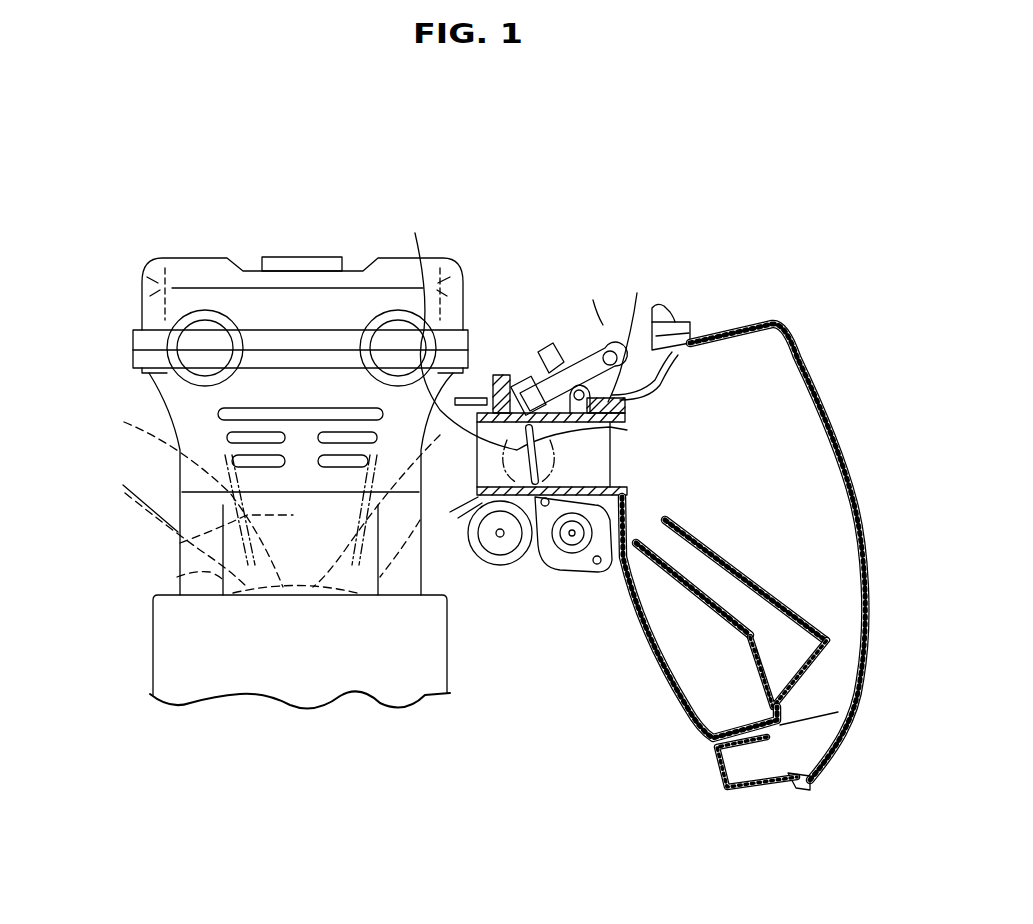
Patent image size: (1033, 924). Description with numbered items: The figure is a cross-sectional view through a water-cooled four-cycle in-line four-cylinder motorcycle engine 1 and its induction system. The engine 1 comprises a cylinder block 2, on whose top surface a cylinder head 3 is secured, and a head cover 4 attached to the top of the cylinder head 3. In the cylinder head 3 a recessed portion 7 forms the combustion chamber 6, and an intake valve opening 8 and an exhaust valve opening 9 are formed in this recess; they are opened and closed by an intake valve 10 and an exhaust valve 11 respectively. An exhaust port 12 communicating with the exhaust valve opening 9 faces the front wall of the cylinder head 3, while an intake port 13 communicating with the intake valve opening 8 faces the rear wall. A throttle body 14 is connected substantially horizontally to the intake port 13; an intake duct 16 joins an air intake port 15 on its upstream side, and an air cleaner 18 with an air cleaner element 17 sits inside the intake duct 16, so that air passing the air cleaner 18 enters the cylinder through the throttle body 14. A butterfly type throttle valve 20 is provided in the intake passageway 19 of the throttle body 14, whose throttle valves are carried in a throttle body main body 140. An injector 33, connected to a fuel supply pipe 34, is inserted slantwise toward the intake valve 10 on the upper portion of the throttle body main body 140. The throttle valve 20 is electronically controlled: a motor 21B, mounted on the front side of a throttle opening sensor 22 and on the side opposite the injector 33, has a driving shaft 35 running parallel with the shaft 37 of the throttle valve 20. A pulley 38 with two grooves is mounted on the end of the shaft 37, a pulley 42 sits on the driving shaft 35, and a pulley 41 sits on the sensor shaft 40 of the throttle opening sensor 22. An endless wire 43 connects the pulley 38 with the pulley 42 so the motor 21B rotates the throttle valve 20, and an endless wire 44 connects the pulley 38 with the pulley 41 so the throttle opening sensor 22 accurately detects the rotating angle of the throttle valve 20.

The engine 1 is at (352, 233).
The cylinder block 2 is at (173, 660).
The cylinder head 3 is at (170, 457).
The head cover 4 is at (142, 299).
The combustion chamber 6 is at (303, 590).
The recessed portion 7 is at (290, 596).
The intake valve opening 8 is at (357, 577).
The exhaust valve opening 9 is at (177, 577).
The intake valve 10 is at (347, 596).
The exhaust valve 11 is at (260, 598).
The exhaust port 12 is at (156, 396).
The intake port 13 is at (495, 373).
The throttle body 14 is at (565, 330).
The air intake port 15 is at (637, 340).
The intake duct 16 is at (660, 387).
The air cleaner element 17 is at (780, 593).
The air cleaner 18 is at (818, 378).
The intake passageway 19 is at (613, 443).
The throttle valve 20 is at (613, 430).
The motor 21B is at (522, 563).
The throttle opening sensor 22 is at (573, 540).
The injector 33 is at (540, 350).
The fuel supply pipe 34 is at (598, 338).
The driving shaft 35 is at (497, 540).
The shaft 37 is at (432, 420).
The pulley 38 is at (575, 472).
The sensor shaft 40 is at (630, 537).
The pulley 41 is at (563, 553).
The pulley 42 is at (496, 536).
The endless wire 43 is at (476, 470).
The endless wire 44 is at (557, 437).
The throttle body main body 140 is at (508, 326).